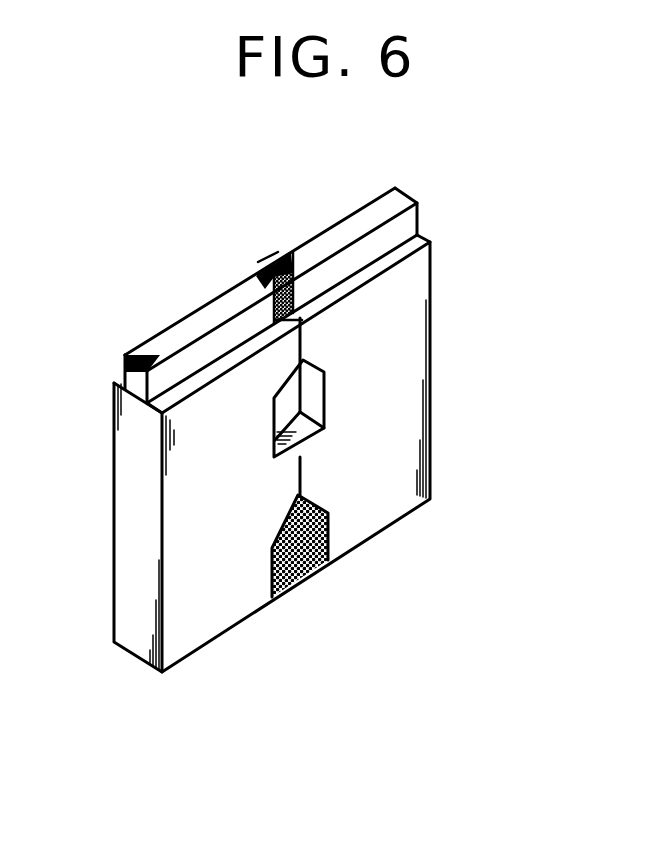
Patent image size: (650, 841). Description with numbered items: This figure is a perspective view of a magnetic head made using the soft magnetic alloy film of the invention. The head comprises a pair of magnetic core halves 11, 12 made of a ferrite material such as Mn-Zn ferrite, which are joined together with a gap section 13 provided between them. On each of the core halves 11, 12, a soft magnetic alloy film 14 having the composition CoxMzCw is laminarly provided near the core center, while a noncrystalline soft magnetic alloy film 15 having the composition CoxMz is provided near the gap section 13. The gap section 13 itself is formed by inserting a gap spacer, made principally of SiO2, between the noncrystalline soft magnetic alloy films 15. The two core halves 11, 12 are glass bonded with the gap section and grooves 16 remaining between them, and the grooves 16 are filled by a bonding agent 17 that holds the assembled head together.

The magnetic core half 11 is at (125, 467).
The magnetic core half 12 is at (430, 410).
The gap section 13 is at (232, 283).
The soft magnetic alloy film 14 is at (279, 251).
The noncrystalline soft magnetic alloy film 15 is at (273, 256).
The groove 16 is at (296, 284).
The bonding agent 17 is at (271, 258).